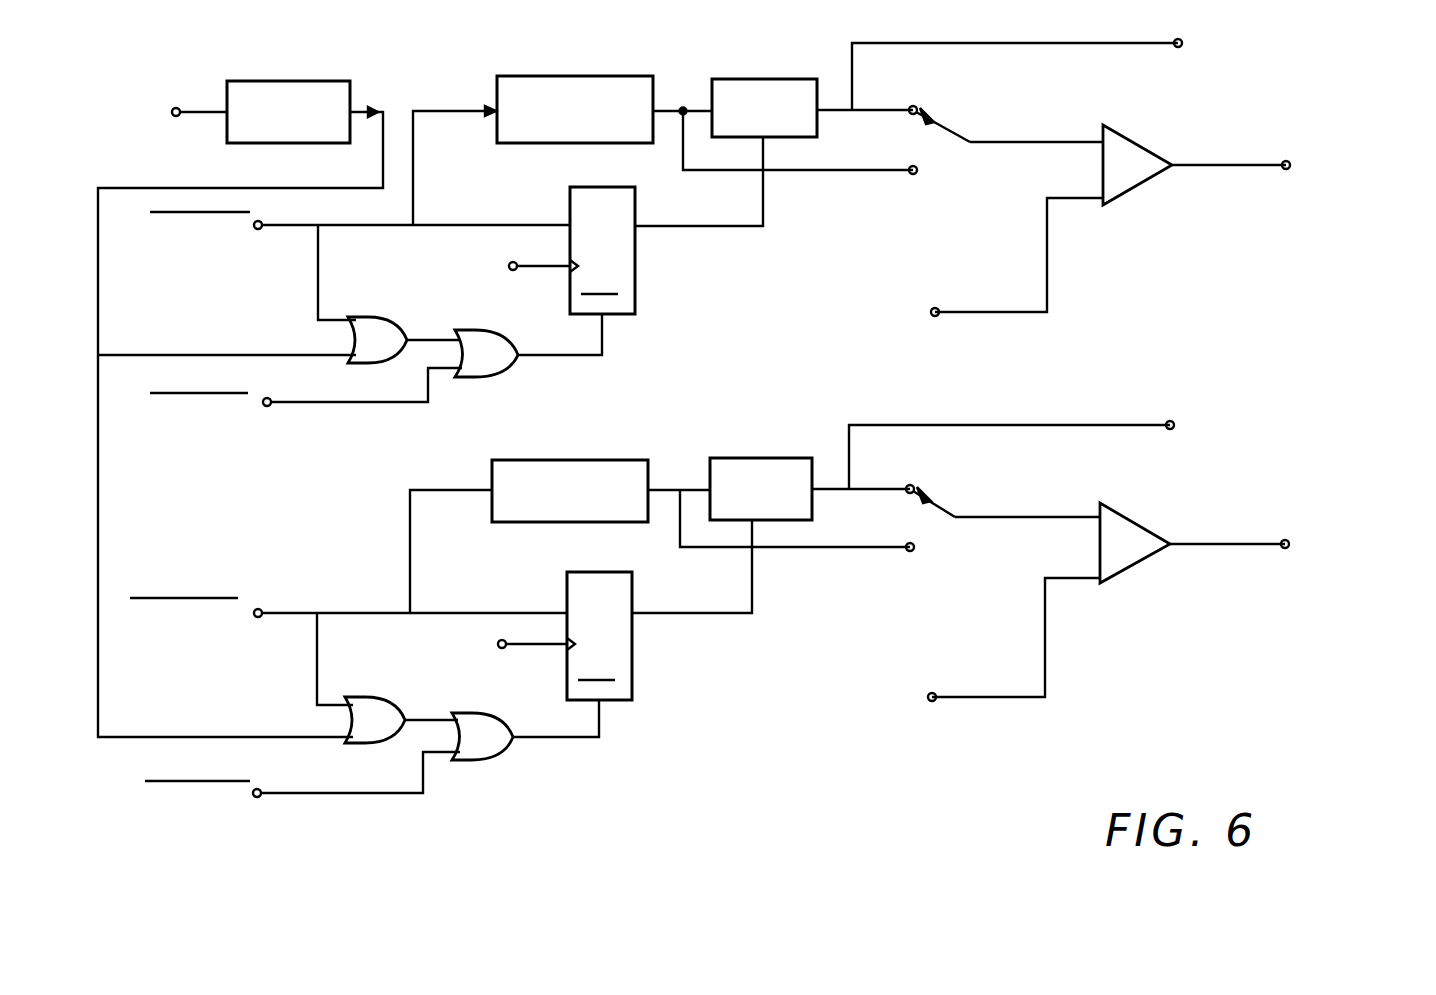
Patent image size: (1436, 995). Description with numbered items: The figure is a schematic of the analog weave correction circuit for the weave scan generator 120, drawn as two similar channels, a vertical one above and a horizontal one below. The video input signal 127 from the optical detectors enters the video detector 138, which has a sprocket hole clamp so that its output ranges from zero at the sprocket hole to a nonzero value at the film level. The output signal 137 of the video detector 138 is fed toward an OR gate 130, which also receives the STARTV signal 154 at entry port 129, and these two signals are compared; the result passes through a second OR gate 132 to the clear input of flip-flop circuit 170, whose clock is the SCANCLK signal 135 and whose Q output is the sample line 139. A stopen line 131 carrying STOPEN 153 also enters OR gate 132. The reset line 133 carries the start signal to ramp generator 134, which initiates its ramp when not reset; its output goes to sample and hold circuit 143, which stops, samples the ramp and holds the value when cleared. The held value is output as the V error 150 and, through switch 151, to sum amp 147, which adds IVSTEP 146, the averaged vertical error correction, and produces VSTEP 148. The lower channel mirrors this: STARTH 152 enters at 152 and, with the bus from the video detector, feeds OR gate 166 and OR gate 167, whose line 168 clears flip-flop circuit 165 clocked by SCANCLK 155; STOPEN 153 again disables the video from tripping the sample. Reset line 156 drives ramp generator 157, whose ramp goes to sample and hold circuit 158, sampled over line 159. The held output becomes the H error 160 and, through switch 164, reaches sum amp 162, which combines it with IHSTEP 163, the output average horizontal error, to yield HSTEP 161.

The weave scan generator 120 is at (1228, 751).
The video input signal 127 is at (190, 116).
The entry port 129 is at (278, 228).
The OR gate 130 is at (370, 364).
The stopen input line 131 is at (298, 403).
The OR gate 132 is at (505, 368).
The reset line 133 is at (456, 115).
The ramp generator 134 is at (586, 143).
The scan clock input 135 is at (524, 269).
The output signal of the video detector 137 is at (320, 190).
The video detector 138 is at (283, 145).
The sample line 139 is at (722, 228).
The sample and hold circuit 143 is at (722, 79).
The IVSTEP 146 is at (948, 311).
The summing amplifier 147 is at (1135, 190).
The VSTEP output 148 is at (1252, 165).
The V error output 150 is at (1150, 46).
The switch 151 is at (947, 135).
The STARTH 152 is at (262, 620).
The STOPEN 153 is at (285, 818).
The STARTV 154 is at (200, 235).
The SCANCLK 155 is at (512, 648).
The reset line 156 is at (440, 495).
The ramp generator 157 is at (598, 524).
The sample and hold circuit 158 is at (772, 440).
The sample line 159 is at (713, 615).
The H error output 160 is at (1090, 428).
The HSTEP output 161 is at (1220, 544).
The summing amplifier 162 is at (1125, 572).
The IHSTEP 163 is at (945, 697).
The switch 164 is at (937, 518).
The flip-flop circuit 165 is at (634, 690).
The OR gate 166 is at (362, 745).
The OR gate 167 is at (487, 758).
The clear line 168 is at (580, 737).
The flip-flop circuit 170 is at (637, 293).